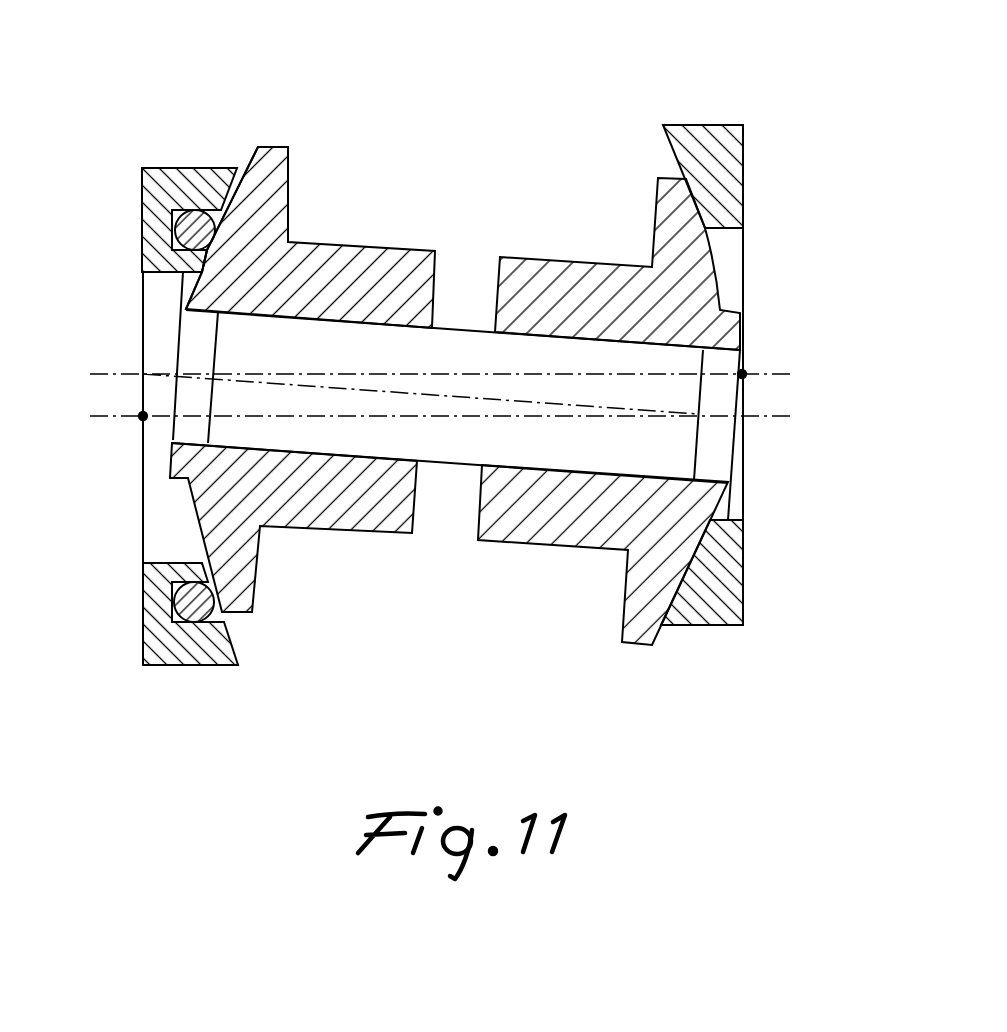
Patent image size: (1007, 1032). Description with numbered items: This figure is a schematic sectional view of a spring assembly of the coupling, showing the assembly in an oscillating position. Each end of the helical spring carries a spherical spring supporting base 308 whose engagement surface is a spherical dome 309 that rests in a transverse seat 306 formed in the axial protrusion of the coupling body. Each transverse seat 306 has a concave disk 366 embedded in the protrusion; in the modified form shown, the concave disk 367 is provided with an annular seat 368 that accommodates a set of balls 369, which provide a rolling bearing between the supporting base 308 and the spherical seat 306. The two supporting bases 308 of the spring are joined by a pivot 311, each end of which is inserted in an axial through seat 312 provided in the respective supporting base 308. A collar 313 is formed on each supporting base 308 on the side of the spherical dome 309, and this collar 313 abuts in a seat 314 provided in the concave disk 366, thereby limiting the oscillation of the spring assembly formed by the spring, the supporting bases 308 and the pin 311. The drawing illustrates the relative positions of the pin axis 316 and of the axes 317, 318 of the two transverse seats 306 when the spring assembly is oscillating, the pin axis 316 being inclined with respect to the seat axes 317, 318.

The transverse seat 306 is at (240, 645).
The spherical spring supporting base 308 is at (533, 280).
The spherical dome 309 is at (720, 257).
The pivot 311 is at (457, 437).
The axial through seat 312 is at (143, 419).
The collar 313 is at (172, 443).
The seat 314 is at (743, 520).
The pin axis 316 is at (376, 393).
The axis of transverse seat 317 is at (325, 418).
The axis of transverse seat 318 is at (577, 374).
The concave disk 366 is at (713, 148).
The concave disk 367 is at (178, 168).
The annular seat 368 is at (228, 222).
The balls 369 is at (192, 230).